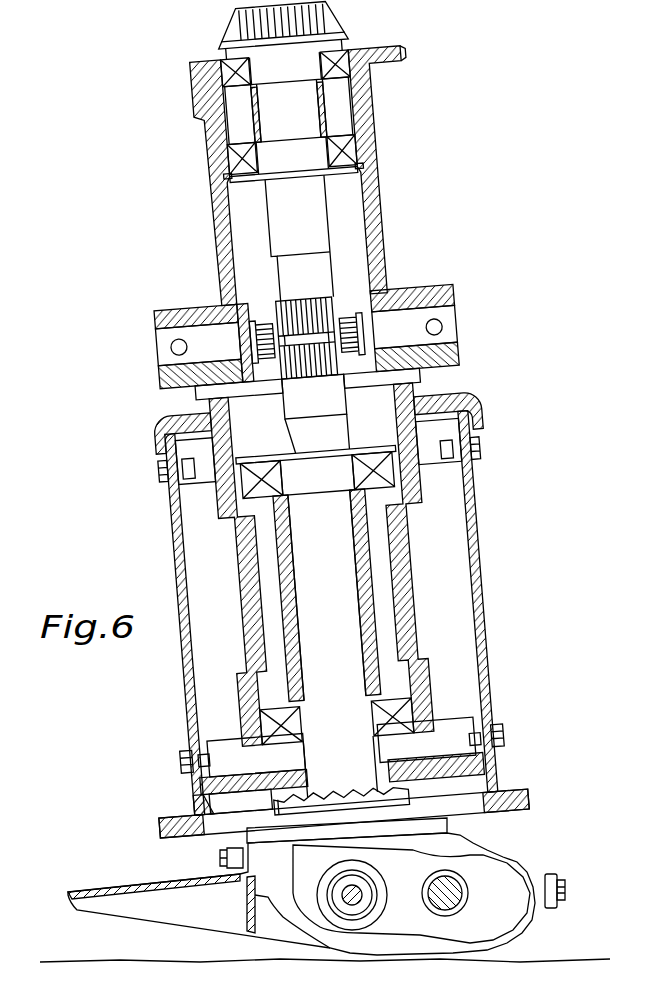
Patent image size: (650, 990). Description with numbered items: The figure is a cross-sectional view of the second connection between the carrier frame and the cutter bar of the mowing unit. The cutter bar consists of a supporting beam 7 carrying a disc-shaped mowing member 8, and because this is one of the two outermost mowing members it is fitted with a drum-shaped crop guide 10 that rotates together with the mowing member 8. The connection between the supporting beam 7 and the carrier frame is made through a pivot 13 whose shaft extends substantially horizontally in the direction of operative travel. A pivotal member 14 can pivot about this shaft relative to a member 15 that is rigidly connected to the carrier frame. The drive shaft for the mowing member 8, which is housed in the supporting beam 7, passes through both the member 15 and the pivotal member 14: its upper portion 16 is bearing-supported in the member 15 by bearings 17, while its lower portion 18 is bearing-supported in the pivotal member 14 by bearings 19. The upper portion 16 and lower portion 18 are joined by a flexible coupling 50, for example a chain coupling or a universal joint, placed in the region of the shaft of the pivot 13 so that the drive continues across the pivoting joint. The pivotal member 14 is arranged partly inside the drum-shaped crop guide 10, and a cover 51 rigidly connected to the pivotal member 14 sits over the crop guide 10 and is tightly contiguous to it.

The supporting beam 7 is at (91, 927).
The mowing member 8 is at (87, 815).
The drum-shaped crop guide 10 is at (434, 521).
The pivot 13 is at (422, 349).
The pivotal member 14 is at (196, 555).
The member 15 is at (366, 306).
The upper portion of the drive shaft 16 is at (263, 204).
The bearings 17 is at (200, 52).
The lower portion of the drive shaft 18 is at (299, 610).
The bearings 19 is at (325, 480).
The flexible coupling 50 is at (248, 298).
The cover 51 is at (133, 403).